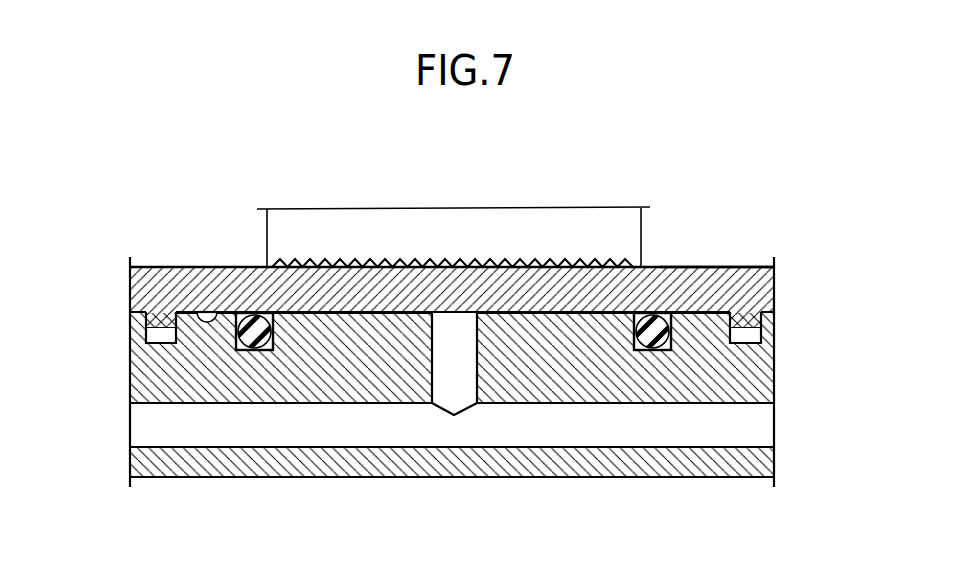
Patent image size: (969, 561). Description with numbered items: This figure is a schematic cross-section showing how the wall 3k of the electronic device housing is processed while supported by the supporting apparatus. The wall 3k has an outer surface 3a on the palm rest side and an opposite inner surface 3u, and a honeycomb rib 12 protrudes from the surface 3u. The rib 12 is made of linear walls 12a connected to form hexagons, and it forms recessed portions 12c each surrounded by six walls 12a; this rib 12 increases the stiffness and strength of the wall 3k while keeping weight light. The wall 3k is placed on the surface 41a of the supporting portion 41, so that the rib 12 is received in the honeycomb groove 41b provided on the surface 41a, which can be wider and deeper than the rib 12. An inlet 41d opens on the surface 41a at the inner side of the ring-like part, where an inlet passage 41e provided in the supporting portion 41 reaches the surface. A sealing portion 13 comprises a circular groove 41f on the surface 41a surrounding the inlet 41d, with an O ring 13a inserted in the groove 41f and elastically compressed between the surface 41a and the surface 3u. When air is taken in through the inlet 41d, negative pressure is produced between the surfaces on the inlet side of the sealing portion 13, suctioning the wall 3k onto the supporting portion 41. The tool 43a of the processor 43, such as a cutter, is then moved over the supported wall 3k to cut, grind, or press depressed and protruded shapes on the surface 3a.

The supporting portion 41 is at (350, 489).
The surface 41a is at (717, 311).
The honeycomb groove 41b is at (143, 341).
The inlet 41d is at (472, 313).
The inlet passage 41e is at (453, 403).
The circular groove 41f is at (245, 350).
The honeycomb rib 12 is at (454, 292).
The wall 12a is at (157, 322).
The recessed portion 12c is at (198, 322).
The surface 3u is at (215, 263).
The surface 3a is at (742, 266).
The wall 3k is at (684, 254).
The tool 43a is at (630, 237).
The processor 43 is at (673, 211).
The O ring 13a is at (253, 335).
The sealing portion 13 is at (452, 415).